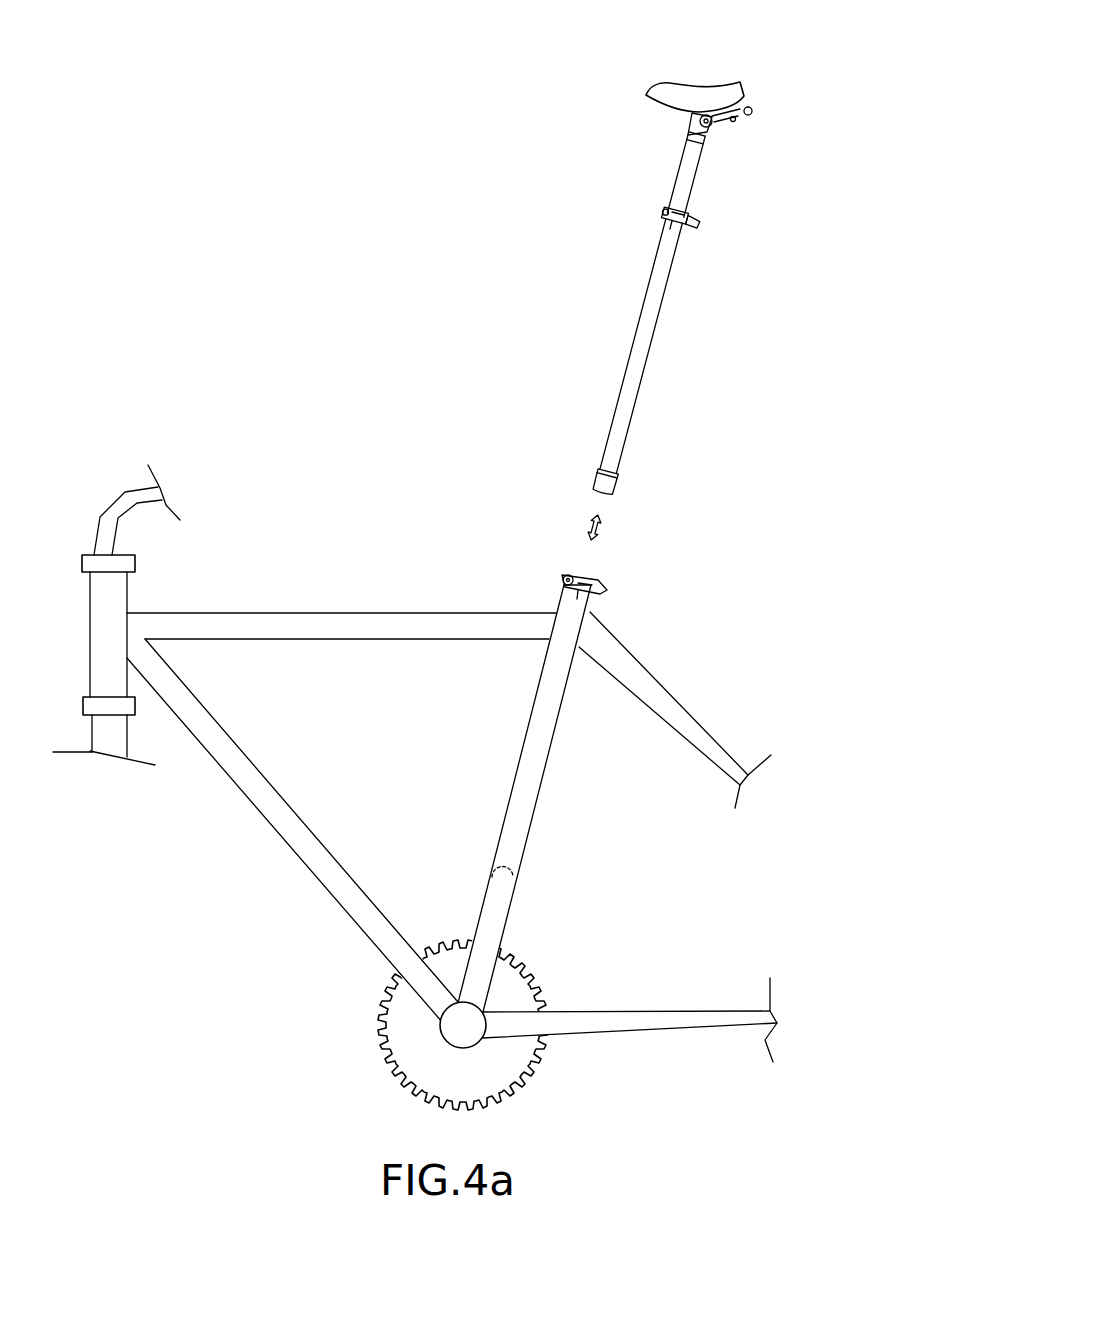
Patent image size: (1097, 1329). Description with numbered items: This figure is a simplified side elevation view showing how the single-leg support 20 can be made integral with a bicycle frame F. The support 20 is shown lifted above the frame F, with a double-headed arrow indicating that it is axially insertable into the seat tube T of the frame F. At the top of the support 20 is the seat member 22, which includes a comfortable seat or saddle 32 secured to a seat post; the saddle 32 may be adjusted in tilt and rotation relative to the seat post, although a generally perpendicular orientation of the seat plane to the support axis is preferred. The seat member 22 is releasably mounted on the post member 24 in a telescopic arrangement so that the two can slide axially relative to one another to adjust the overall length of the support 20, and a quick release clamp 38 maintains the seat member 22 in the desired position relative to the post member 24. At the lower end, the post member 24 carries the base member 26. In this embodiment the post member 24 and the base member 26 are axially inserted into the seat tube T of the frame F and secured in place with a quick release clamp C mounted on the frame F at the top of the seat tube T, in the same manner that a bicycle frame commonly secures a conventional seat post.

The single-leg support 20 is at (622, 108).
The saddle 32 is at (737, 92).
The seat member 22 is at (690, 180).
The quick release clamp 38 is at (697, 220).
The post member 24 is at (657, 325).
The base member 26 is at (615, 488).
The bicycle frame F is at (398, 622).
The quick release clamp of the frame C is at (600, 583).
The seat tube T is at (527, 810).